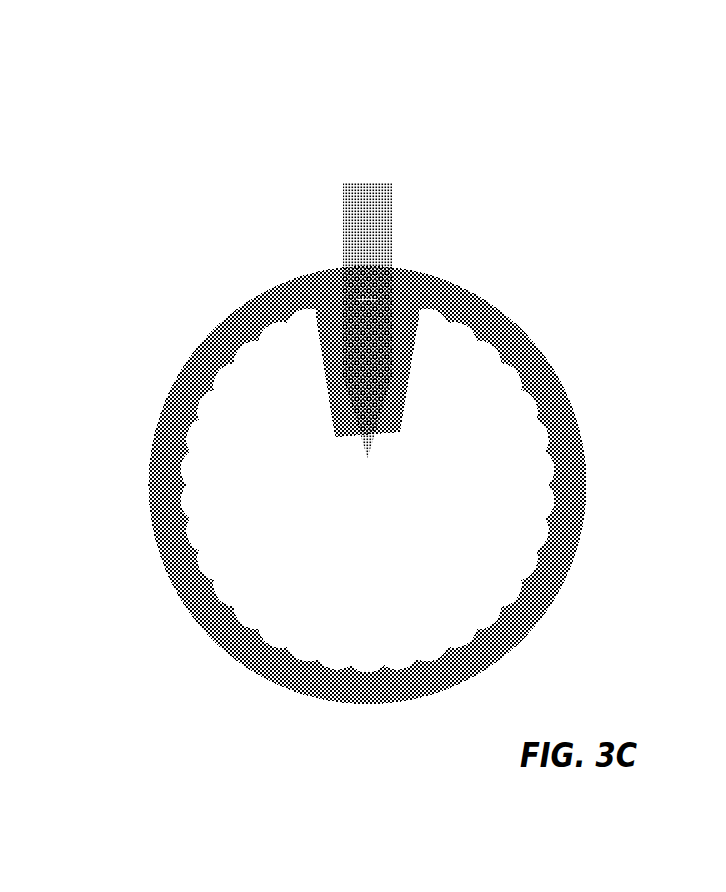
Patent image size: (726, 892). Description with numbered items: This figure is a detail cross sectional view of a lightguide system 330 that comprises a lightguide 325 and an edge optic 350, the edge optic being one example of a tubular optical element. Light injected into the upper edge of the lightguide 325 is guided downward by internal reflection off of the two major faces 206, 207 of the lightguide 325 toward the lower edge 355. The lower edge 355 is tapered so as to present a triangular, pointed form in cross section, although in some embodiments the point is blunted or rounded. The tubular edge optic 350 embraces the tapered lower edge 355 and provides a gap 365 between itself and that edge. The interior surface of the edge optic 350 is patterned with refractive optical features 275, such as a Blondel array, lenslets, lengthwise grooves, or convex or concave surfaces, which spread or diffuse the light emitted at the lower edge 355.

The lightguide system 330 is at (582, 150).
The lightguide 325 is at (398, 205).
The major face of the lightguide 206 is at (338, 238).
The major face of the lightguide 207 is at (398, 238).
The edge optic 350 is at (212, 665).
The refractive optical features 275 is at (322, 637).
The gap 365 is at (343, 462).
The lower edge 355 is at (370, 482).